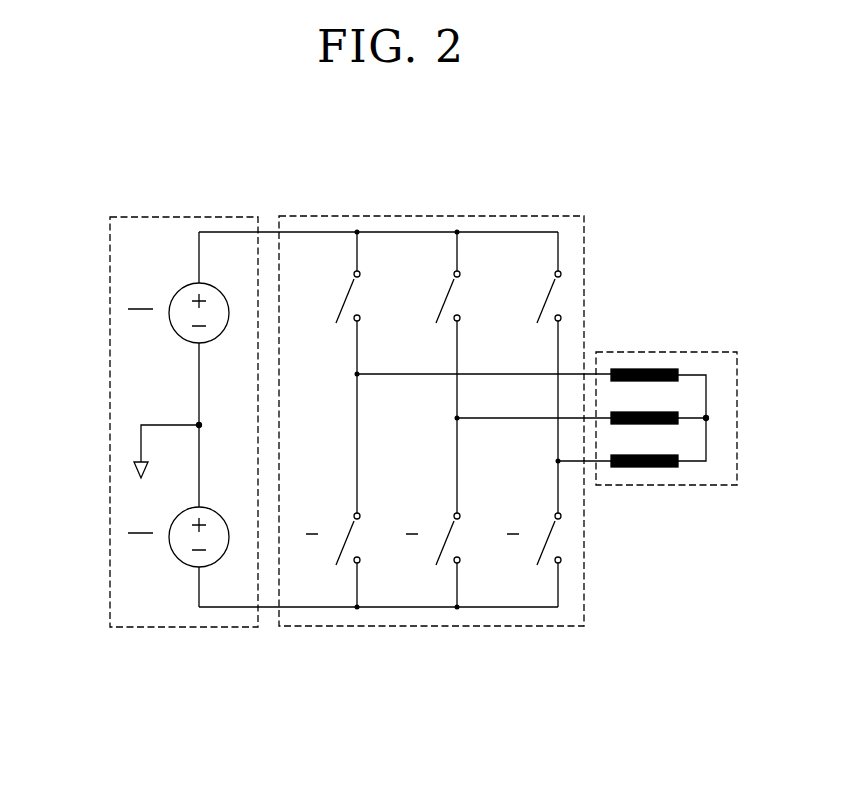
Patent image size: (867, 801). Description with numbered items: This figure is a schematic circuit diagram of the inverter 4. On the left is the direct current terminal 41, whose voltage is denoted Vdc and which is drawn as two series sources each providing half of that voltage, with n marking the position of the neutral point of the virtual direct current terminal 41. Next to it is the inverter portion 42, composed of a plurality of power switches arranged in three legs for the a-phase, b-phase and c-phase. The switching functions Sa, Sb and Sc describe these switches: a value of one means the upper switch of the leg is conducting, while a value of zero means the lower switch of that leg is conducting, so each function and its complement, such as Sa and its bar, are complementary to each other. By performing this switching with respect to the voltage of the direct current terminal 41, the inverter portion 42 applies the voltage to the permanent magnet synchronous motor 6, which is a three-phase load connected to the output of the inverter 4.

The inverter 4 is at (612, 201).
The direct current terminal 41 is at (187, 216).
The inverter portion 42 is at (421, 216).
The permanent magnet synchronous motor 6 is at (667, 352).